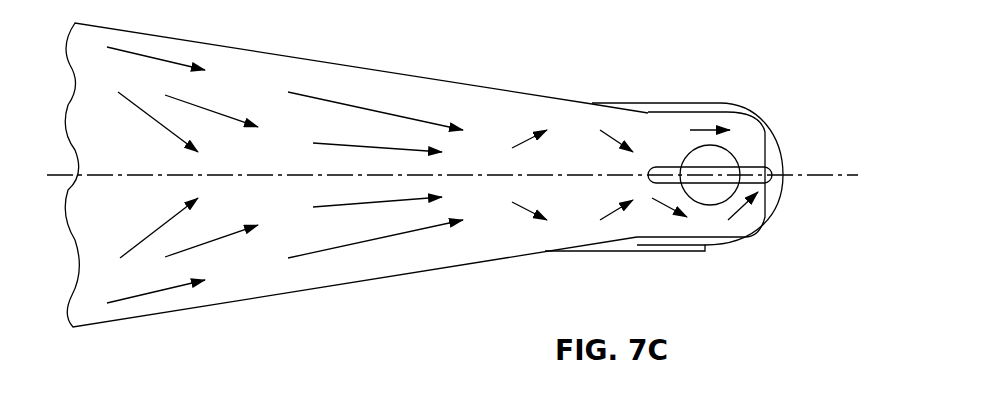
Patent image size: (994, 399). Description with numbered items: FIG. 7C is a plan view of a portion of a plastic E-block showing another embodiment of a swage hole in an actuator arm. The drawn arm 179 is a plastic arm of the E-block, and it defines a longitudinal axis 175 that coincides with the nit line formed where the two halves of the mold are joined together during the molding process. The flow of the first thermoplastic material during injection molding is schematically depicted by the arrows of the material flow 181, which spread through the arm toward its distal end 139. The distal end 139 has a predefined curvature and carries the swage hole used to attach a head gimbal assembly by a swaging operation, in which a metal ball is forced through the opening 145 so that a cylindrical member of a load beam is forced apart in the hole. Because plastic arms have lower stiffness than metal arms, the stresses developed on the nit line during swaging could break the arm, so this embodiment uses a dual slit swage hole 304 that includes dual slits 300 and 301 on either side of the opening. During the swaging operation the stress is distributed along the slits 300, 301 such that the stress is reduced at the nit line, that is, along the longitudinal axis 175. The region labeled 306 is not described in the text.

The distal end 139 is at (775, 140).
The opening 145 is at (712, 204).
The longitudinal axis 175 is at (847, 173).
The arm 179 is at (190, 315).
The thermoplastic material flow 181 is at (232, 116).
The slit 300 is at (770, 183).
The slit 301 is at (652, 165).
The dual slit swage hole 304 is at (733, 157).
The chamber 306 is at (680, 150).